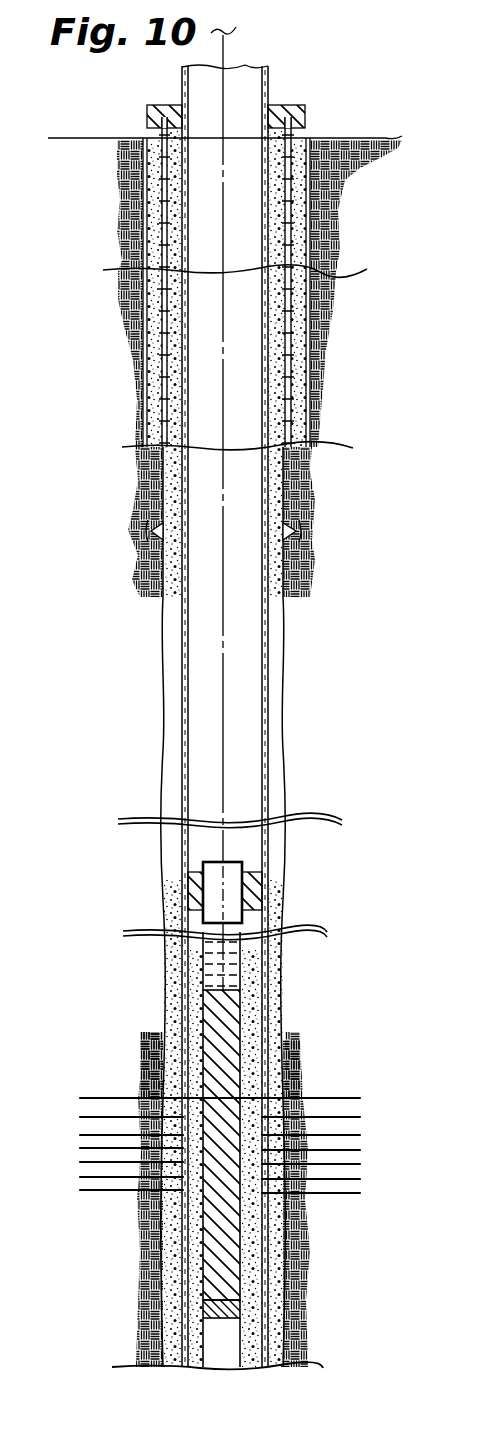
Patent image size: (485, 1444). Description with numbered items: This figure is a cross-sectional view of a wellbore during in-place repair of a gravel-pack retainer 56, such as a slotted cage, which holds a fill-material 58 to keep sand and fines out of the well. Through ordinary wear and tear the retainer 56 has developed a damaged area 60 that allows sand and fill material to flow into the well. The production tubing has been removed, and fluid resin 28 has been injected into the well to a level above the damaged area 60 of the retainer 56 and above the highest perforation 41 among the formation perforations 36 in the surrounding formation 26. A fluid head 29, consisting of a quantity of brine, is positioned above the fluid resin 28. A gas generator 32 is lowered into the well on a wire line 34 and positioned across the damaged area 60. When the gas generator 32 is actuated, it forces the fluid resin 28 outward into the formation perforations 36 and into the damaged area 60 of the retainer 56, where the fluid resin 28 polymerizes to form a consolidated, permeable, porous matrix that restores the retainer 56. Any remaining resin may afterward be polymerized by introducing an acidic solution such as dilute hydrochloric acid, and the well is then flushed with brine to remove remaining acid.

The formation 26 is at (307, 1228).
The fluid resin 28 is at (142, 1228).
The fluid head 29 is at (242, 968).
The gas generator 32 is at (297, 1072).
The wire line 34 is at (223, 657).
The formation perforations 36 is at (83, 1093).
The highest perforation 41 is at (143, 1071).
The retainer 56 is at (242, 1015).
The fill-material 58 is at (286, 1045).
The damaged area 60 is at (140, 1202).